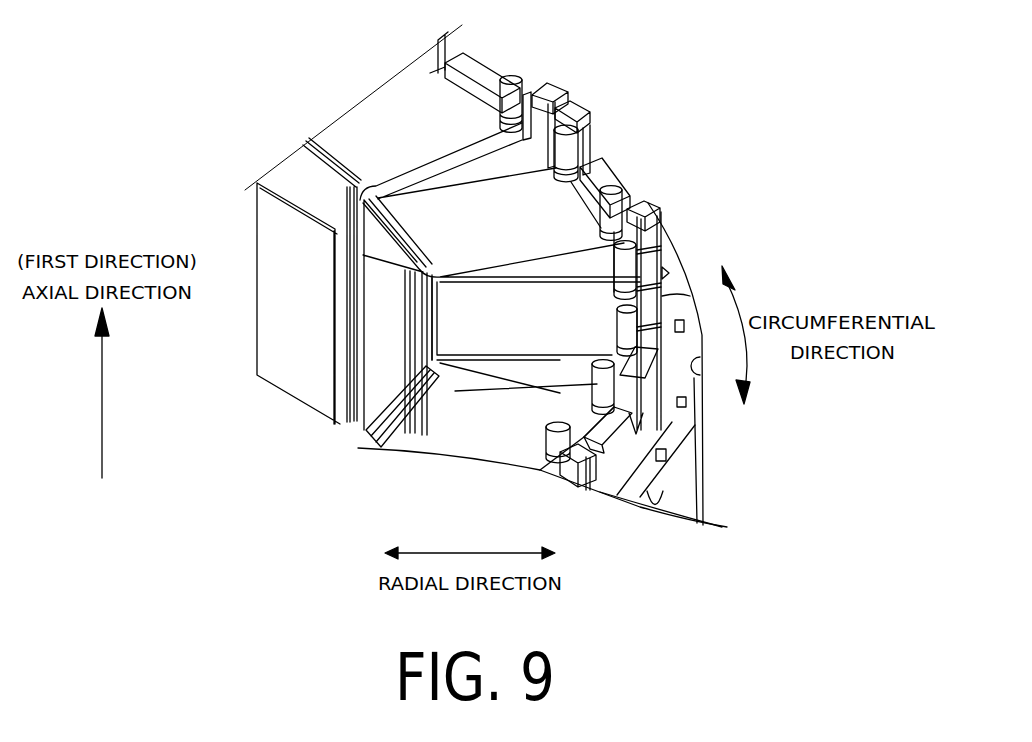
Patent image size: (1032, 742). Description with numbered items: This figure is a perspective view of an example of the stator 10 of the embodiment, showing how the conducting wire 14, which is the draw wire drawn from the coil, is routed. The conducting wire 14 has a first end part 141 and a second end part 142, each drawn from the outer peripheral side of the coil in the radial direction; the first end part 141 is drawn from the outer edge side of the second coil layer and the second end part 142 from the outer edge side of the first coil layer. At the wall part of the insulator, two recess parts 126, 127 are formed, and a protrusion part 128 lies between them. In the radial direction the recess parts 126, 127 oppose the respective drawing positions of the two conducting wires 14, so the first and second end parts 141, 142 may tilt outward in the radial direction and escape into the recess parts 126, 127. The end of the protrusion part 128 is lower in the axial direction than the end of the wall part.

The assembly 10 is at (570, 324).
The conducting wire 14 is at (351, 312).
The first end part 141 is at (542, 440).
The second end part 142 is at (350, 422).
The recess part 126 is at (600, 488).
The recess part 127 is at (643, 410).
The protrusion part 128 is at (603, 443).